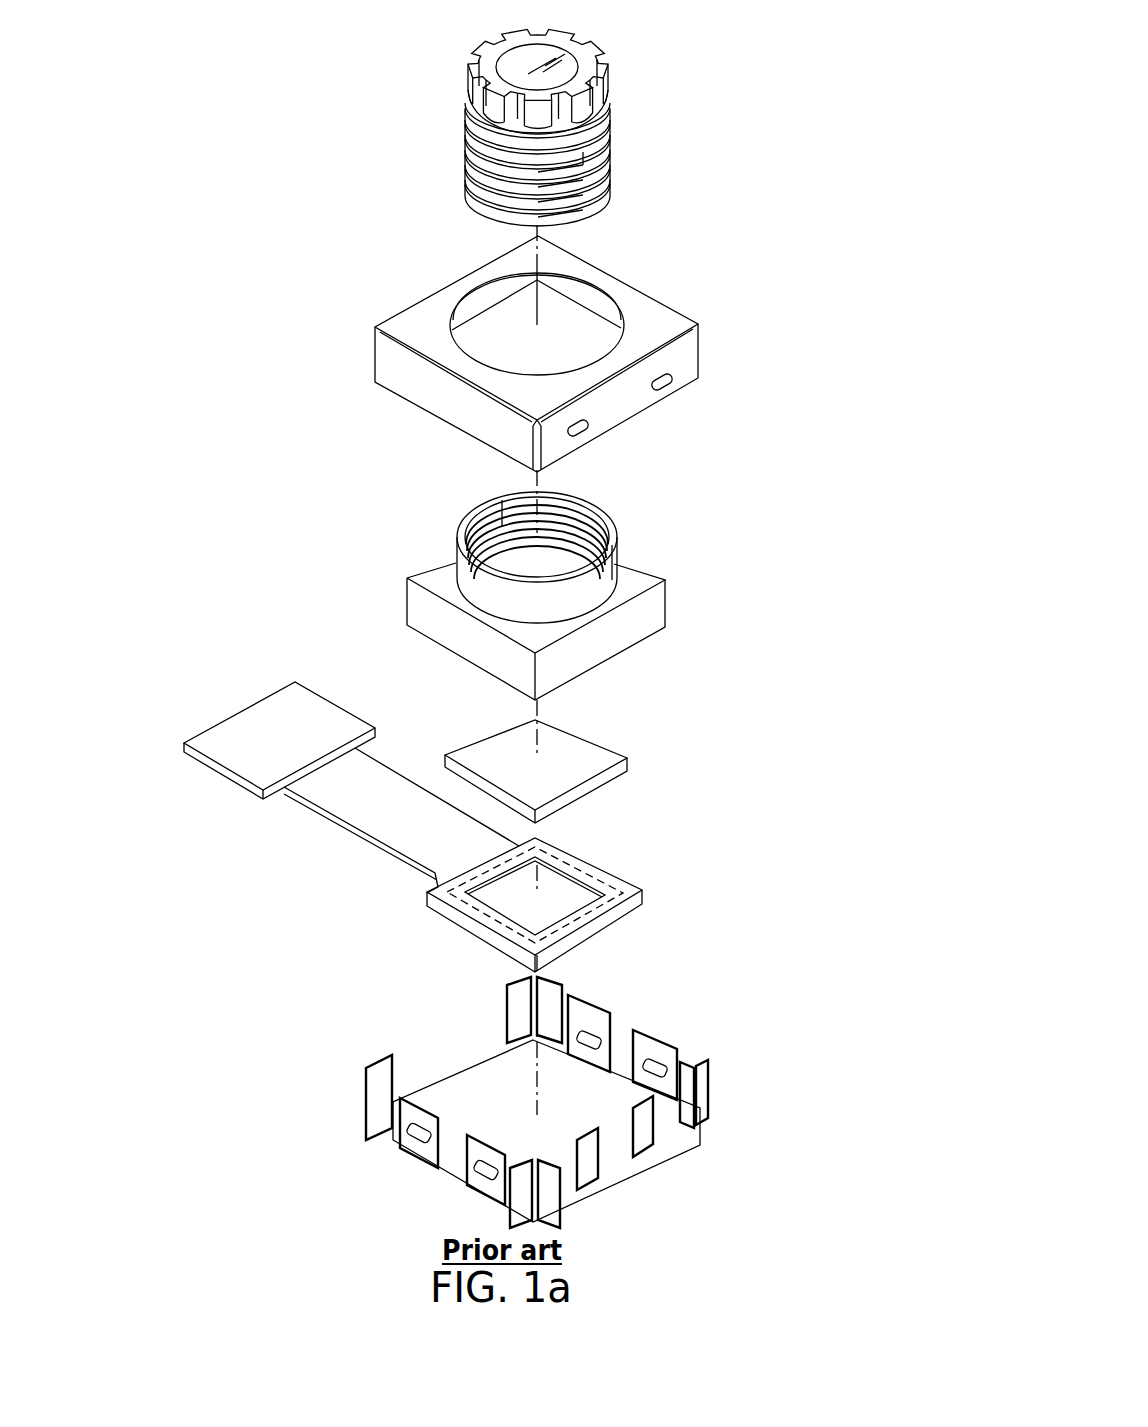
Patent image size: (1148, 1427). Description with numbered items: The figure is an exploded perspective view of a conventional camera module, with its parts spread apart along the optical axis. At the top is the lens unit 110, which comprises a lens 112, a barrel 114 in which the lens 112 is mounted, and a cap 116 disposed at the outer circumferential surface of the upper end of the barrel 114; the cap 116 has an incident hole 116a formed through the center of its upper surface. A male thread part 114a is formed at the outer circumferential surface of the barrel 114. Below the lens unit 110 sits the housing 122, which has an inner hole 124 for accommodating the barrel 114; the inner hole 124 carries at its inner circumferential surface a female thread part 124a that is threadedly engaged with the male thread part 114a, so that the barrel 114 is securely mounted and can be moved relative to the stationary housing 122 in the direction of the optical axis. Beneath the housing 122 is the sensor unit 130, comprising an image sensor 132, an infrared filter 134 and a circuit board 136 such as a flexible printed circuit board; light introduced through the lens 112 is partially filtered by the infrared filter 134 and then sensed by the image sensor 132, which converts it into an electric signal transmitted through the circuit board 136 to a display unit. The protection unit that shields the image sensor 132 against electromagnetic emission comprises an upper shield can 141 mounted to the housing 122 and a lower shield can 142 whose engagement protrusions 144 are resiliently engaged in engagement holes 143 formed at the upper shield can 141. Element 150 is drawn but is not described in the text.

The lens unit 110 is at (745, 2).
The lens 112 is at (545, 66).
The barrel 114 is at (612, 157).
The male thread part 114a is at (608, 190).
The cap 116 is at (603, 92).
The incident hole 116a is at (600, 62).
The housing 122 is at (660, 600).
The inner hole 124 is at (605, 570).
The female thread part 124a is at (594, 535).
The sensor unit 130 is at (740, 728).
The image sensor 132 is at (575, 862).
The infrared (IR) filter 134 is at (612, 753).
The circuit board 136 is at (640, 880).
The upper shield can 141 is at (698, 364).
The lower shield can 142 is at (603, 1108).
The engagement holes 143 is at (664, 390).
The engagement protrusions 144 is at (593, 1175).
The flexible printed circuit board 150 is at (258, 707).